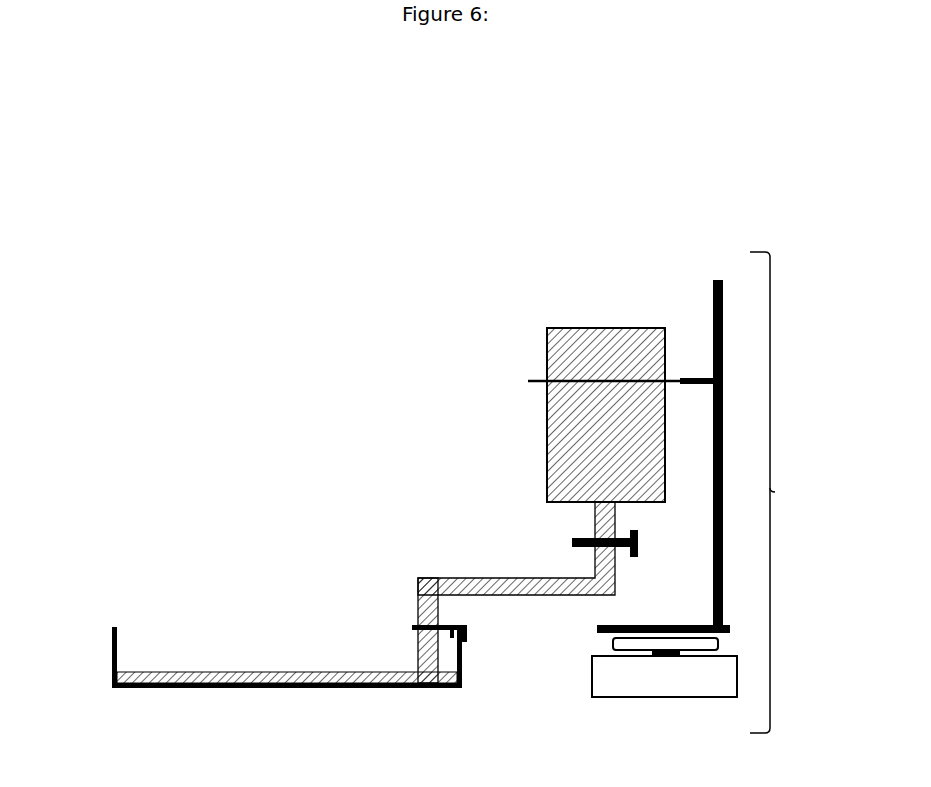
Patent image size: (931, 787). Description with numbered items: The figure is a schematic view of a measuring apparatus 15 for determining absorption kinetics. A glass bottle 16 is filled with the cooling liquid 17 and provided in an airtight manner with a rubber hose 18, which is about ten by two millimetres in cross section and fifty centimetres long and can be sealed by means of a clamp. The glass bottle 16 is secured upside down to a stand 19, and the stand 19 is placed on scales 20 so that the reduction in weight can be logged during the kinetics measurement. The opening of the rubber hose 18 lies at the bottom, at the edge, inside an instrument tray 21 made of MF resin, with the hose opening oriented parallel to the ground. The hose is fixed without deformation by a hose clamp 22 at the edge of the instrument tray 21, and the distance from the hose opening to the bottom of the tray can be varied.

The measuring apparatus 15 is at (781, 492).
The glass bottle 16 is at (606, 317).
The cooling liquid 17 is at (530, 373).
The rubber hose 18 is at (528, 554).
The stand 19 is at (734, 348).
The scales 20 is at (664, 706).
The instrument tray 21 is at (106, 644).
The hose clamp 22 is at (405, 620).